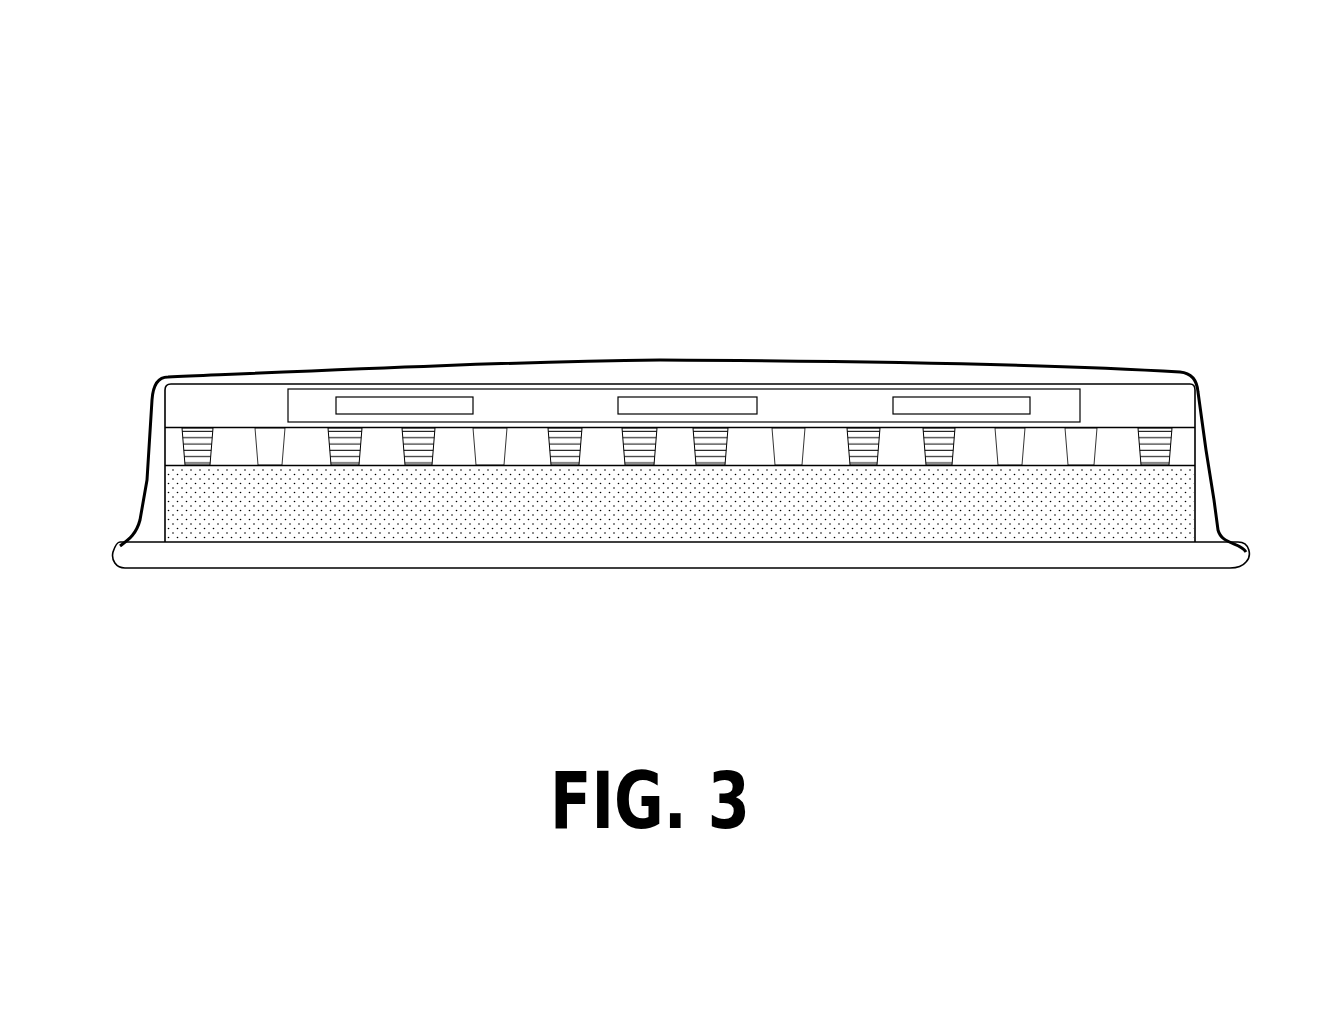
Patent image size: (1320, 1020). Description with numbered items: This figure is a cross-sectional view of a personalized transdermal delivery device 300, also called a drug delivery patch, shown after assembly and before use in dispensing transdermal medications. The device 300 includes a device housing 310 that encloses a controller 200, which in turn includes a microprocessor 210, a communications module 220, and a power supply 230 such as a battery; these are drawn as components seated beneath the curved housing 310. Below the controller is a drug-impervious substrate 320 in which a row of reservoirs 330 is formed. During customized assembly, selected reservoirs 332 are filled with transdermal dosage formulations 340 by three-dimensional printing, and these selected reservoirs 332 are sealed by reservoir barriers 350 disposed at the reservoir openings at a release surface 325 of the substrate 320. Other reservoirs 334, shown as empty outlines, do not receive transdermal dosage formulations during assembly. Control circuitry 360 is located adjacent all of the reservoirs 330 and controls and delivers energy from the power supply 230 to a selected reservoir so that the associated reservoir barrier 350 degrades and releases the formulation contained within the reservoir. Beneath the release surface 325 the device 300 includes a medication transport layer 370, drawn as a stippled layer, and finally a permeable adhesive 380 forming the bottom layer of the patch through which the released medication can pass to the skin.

The transdermal delivery device 300 is at (1013, 195).
The device housing 310 is at (1017, 368).
The drug-impervious substrate 320 is at (1195, 443).
The controller 200 is at (313, 403).
The microprocessor 210 is at (418, 400).
The communications module 220 is at (677, 400).
The power supply 230 is at (962, 398).
The release surface 325 is at (455, 467).
The reservoirs 330 is at (348, 453).
The selected reservoirs 332 is at (872, 463).
The other reservoirs 334 is at (790, 450).
The transdermal dosage formulations 340 is at (563, 453).
The reservoir barriers 350 is at (710, 470).
The control circuitry 360 is at (992, 470).
The medication transport layer 370 is at (1158, 503).
The permeable adhesive 380 is at (1125, 553).